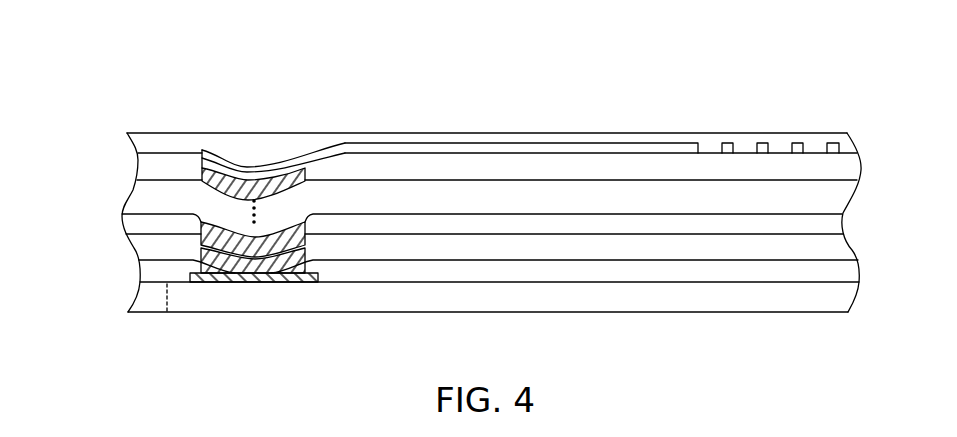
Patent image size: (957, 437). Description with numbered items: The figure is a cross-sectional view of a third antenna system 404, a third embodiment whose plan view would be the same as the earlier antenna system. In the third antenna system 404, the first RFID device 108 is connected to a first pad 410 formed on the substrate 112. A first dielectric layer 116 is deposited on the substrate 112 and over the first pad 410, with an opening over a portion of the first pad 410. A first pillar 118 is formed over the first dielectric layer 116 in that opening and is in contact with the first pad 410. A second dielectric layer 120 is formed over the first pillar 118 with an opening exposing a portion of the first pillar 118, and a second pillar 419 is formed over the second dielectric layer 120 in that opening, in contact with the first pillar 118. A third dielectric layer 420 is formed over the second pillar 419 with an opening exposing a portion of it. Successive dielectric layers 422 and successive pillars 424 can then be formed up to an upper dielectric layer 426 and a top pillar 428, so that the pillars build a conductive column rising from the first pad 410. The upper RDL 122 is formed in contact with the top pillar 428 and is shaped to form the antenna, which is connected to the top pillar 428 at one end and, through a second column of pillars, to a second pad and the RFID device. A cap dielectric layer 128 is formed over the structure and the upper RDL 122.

The third antenna system 404 is at (124, 72).
The cap dielectric layer 128 is at (140, 138).
The upper dielectric layer 426 is at (147, 163).
The successive dielectric layers 422 is at (147, 197).
The third dielectric layer 420 is at (140, 226).
The second dielectric layer 120 is at (150, 249).
The first dielectric layer 116 is at (150, 272).
The substrate 112 is at (150, 299).
The first RFID device 108 is at (538, 306).
The upper RDL 122 is at (612, 148).
The top pillar 428 is at (228, 188).
The successive pillars 424 is at (305, 203).
The second pillar 419 is at (222, 282).
The first pillar 118 is at (258, 282).
The first pad 410 is at (297, 282).